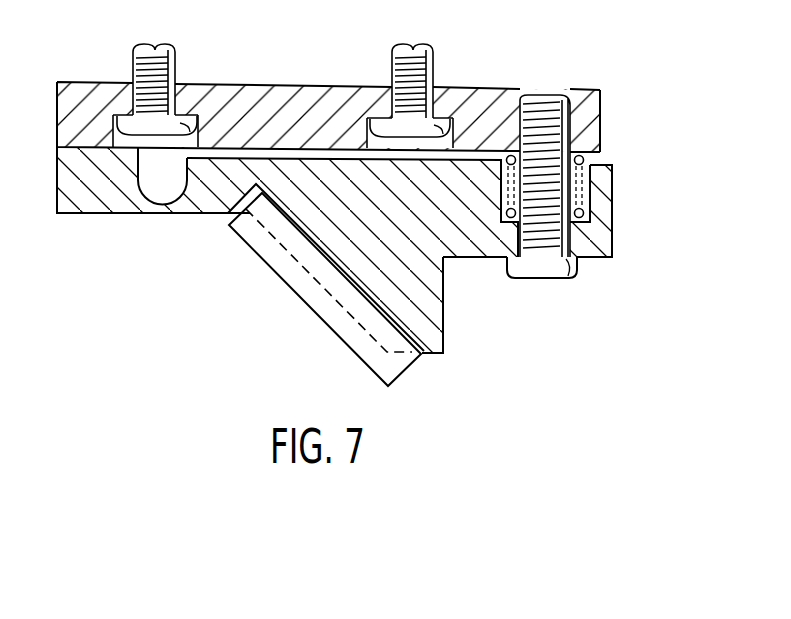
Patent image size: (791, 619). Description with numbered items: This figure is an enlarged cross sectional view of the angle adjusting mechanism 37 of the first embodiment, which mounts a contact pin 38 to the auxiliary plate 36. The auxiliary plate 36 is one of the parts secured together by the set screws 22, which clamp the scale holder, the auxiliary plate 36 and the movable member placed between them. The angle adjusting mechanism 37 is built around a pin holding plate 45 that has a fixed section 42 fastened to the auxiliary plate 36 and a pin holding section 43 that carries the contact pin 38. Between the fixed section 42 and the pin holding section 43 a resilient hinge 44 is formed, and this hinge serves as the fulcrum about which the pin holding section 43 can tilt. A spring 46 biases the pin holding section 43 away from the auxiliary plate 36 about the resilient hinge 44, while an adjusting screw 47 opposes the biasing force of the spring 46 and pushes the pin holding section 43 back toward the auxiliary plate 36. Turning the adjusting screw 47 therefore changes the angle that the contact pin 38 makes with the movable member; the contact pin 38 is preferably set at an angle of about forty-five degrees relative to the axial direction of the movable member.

The set screws 22 is at (396, 58).
The auxiliary plate 36 is at (595, 117).
The angle adjusting mechanism 37 is at (367, 254).
The contact pin 38 is at (363, 358).
The fixed section 42 is at (102, 203).
The pin holding section 43 is at (446, 332).
The resilient hinge 44 is at (162, 205).
The pin holding plate 45 is at (487, 259).
The spring 46 is at (586, 200).
The adjusting screw 47 is at (565, 278).